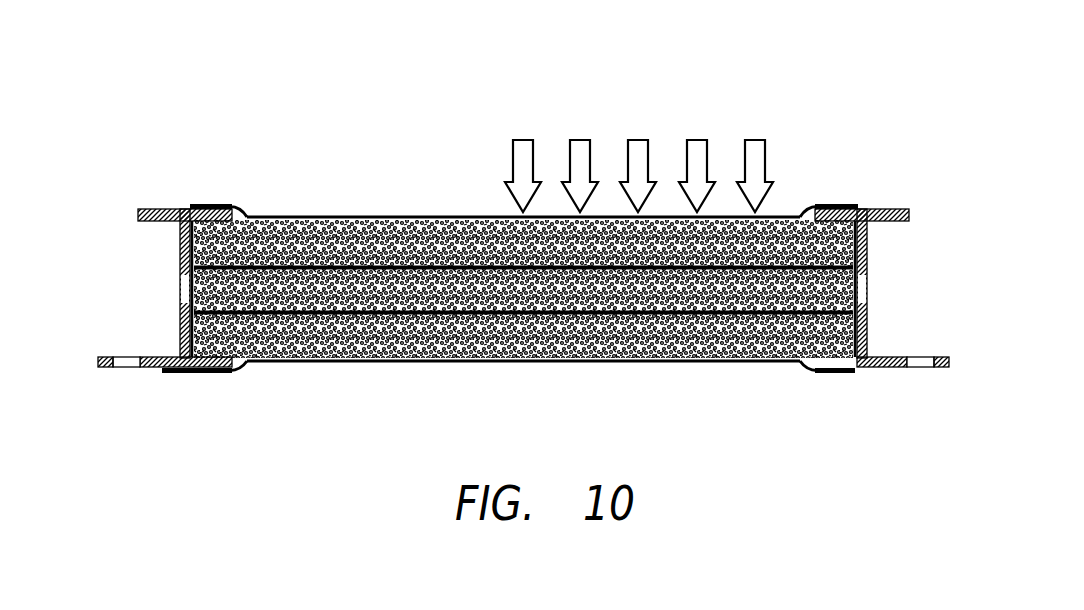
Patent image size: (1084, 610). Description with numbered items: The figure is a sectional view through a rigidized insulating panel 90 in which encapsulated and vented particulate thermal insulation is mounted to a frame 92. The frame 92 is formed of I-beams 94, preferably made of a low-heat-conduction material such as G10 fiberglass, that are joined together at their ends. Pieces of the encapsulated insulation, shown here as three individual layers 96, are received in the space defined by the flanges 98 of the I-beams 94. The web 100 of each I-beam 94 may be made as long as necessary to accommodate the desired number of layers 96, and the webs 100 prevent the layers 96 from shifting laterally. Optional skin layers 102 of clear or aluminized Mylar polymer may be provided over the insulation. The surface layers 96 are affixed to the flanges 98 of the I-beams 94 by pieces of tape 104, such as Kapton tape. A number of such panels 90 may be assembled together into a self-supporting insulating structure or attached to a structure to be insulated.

The insulating panel 90 is at (276, 143).
The frame 92 is at (165, 268).
The I-beam 94 is at (867, 245).
The layer 96 is at (550, 362).
The flange 98 is at (147, 368).
The web 100 is at (180, 330).
The skin layer 102 is at (388, 218).
The tape 104 is at (195, 374).